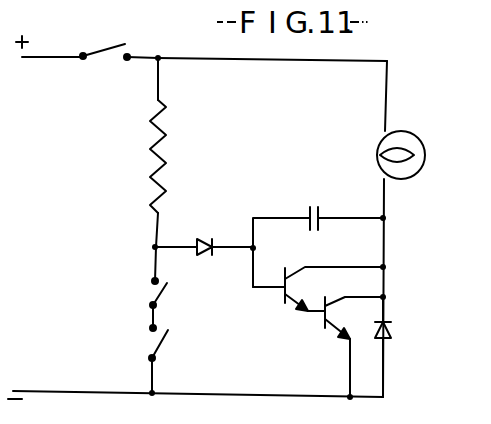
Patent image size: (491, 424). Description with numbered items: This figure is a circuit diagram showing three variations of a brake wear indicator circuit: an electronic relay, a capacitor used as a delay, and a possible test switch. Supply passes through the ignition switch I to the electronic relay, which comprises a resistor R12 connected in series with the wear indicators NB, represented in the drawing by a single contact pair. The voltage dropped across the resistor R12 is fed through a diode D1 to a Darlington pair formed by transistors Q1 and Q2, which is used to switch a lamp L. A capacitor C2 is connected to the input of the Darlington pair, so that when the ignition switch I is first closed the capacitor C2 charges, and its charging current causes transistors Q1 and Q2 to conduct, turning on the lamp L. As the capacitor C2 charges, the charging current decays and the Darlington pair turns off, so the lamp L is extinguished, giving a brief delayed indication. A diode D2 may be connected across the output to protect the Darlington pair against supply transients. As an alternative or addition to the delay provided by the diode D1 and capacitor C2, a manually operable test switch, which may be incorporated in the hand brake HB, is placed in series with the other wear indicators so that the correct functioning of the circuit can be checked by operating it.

The ignition switch I is at (105, 42).
The resistor R12 is at (181, 156).
The diode D1 is at (210, 234).
The capacitor C2 is at (316, 205).
The transistor Q1 is at (320, 292).
The transistor Q2 is at (340, 322).
The diode D2 is at (401, 336).
The lamp L is at (410, 155).
The wear indicators NB is at (175, 294).
The hand brake HB is at (174, 343).